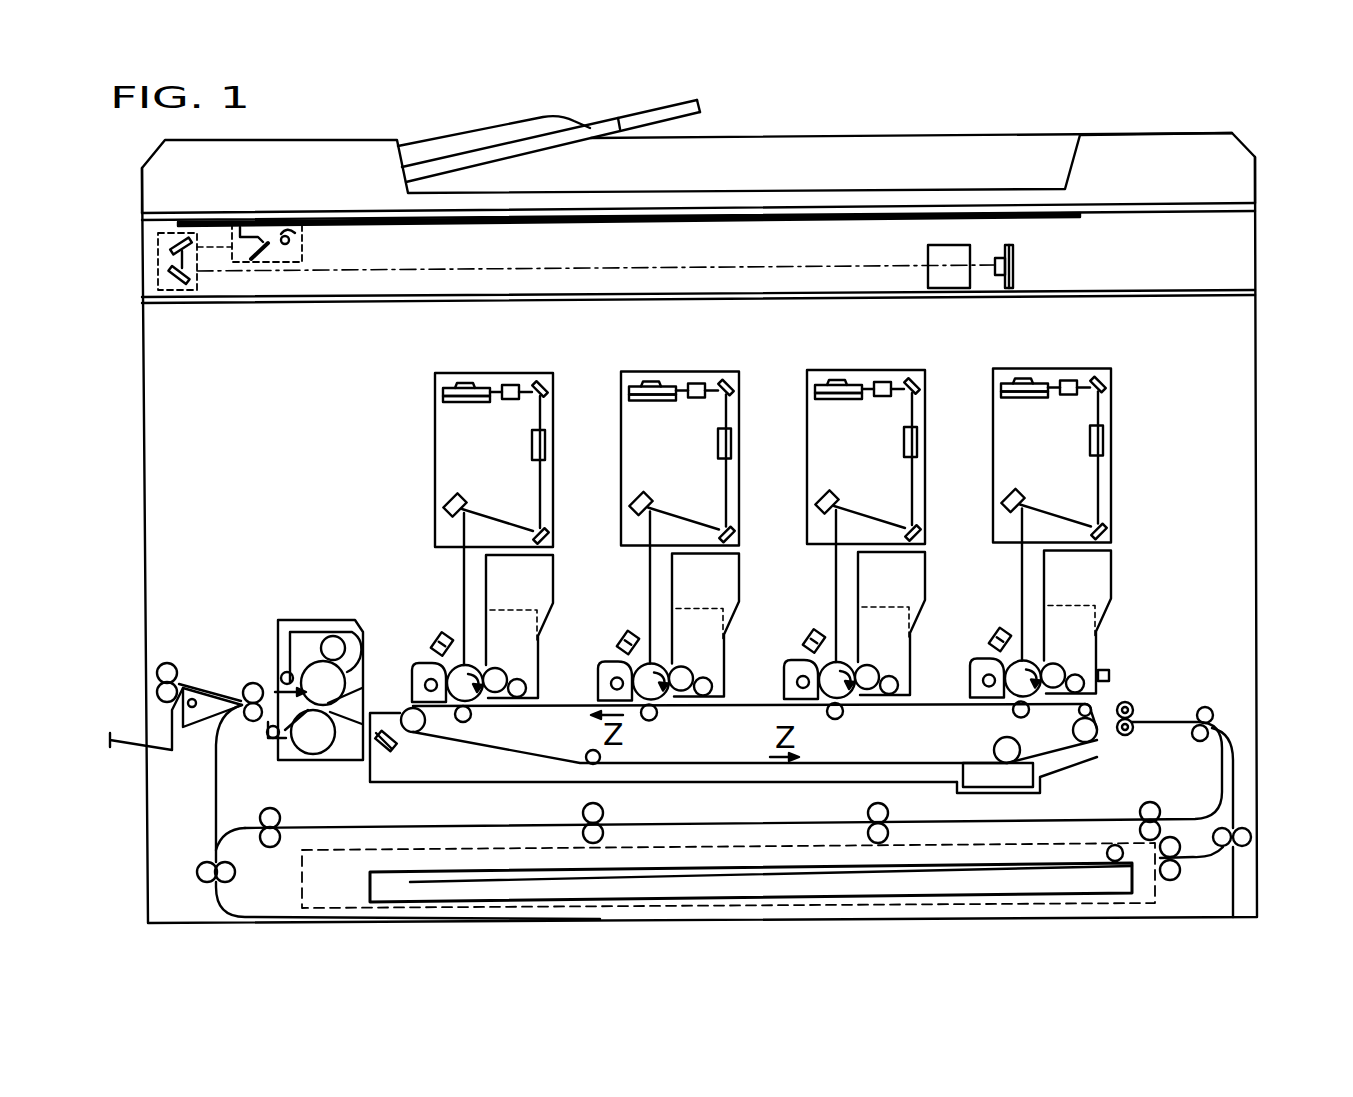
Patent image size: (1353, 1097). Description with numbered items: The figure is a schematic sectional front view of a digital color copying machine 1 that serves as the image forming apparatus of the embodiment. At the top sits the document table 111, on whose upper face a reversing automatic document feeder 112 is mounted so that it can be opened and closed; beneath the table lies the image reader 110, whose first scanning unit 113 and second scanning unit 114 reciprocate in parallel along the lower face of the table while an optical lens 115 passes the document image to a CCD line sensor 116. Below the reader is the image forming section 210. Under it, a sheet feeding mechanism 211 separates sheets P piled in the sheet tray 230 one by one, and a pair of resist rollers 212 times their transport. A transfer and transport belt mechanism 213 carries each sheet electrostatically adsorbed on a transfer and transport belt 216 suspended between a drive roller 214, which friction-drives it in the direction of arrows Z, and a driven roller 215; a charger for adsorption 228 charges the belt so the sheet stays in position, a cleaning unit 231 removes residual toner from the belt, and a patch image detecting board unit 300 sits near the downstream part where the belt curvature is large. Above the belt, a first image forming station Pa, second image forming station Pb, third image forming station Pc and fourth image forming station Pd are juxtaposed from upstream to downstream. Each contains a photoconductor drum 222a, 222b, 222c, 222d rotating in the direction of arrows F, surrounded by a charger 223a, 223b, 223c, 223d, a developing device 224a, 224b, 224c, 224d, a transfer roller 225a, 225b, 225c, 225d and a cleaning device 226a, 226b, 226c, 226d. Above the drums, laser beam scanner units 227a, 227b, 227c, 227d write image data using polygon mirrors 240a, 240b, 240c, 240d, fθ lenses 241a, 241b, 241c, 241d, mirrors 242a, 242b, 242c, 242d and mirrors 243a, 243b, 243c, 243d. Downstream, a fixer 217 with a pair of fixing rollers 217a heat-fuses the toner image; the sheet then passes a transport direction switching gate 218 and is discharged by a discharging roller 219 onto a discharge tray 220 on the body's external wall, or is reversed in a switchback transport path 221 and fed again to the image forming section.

The digital color copying machine 1 is at (1268, 138).
The image reader 110 is at (1216, 259).
The document table 111 is at (967, 213).
The reversing automatic document feeder 112 is at (1215, 188).
The first scanning unit 113 is at (302, 241).
The second scanning unit 114 is at (172, 291).
The optical lens 115 is at (928, 254).
The CCD line sensor 116 is at (1013, 258).
The image forming section 210 is at (1217, 613).
The sheet feeding mechanism 211 is at (1210, 867).
The resist rollers 212 is at (1137, 704).
The transfer and transport belt mechanism 213 is at (857, 755).
The drive roller 214 is at (440, 733).
The driven roller 215 is at (1097, 738).
The transfer and transport belt 216 is at (926, 765).
The fixer 217 is at (330, 624).
The fixing rollers 217a is at (360, 620).
The transport direction switching gate 218 is at (210, 688).
The discharging roller 219 is at (167, 662).
The discharge tray 220 is at (122, 755).
The switchback transport path 221 is at (232, 893).
The photoconductor drum 222a is at (1057, 656).
The photoconductor drum 222b is at (871, 657).
The photoconductor drum 222c is at (685, 659).
The photoconductor drum 222d is at (472, 672).
The charger 223a is at (985, 616).
The charger 223b is at (799, 617).
The charger 223c is at (613, 619).
The charger 223d is at (441, 632).
The developing device 224a is at (1077, 622).
The developing device 224b is at (891, 623).
The developing device 224c is at (705, 625).
The developing device 224d is at (509, 604).
The transfer roller 225a is at (1059, 722).
The transfer roller 225b is at (873, 723).
The transfer roller 225c is at (687, 725).
The transfer roller 225d is at (472, 716).
The cleaning device 226a is at (965, 657).
The cleaning device 226b is at (779, 658).
The cleaning device 226c is at (593, 660).
The cleaning device 226d is at (414, 665).
The laser beam scanner unit 227a is at (1049, 481).
The laser beam scanner unit 227b is at (863, 482).
The laser beam scanner unit 227c is at (677, 484).
The laser beam scanner unit 227d is at (447, 367).
The charger for adsorption 228 is at (1097, 708).
The sheet tray 230 is at (1137, 892).
The cleaning unit 231 is at (1043, 781).
The polygon mirror 240a is at (1027, 411).
The polygon mirror 240b is at (841, 412).
The polygon mirror 240c is at (655, 414).
The polygon mirror 240d is at (457, 404).
The fθ lens 241a is at (1063, 405).
The fθ lens 241b is at (877, 406).
The fθ lens 241c is at (691, 408).
The fθ lens 241d is at (507, 384).
The mirror 242a is at (1084, 435).
The mirror 242b is at (898, 436).
The mirror 242c is at (712, 438).
The mirror 242d is at (540, 381).
The mirror 243a is at (992, 481).
The mirror 243b is at (806, 482).
The mirror 243c is at (620, 484).
The mirror 243d is at (448, 497).
The patch image detecting board unit 300 is at (397, 751).
The sheet P is at (475, 880).
The first image forming station Pa is at (999, 600).
The second image forming station Pb is at (813, 601).
The third image forming station Pc is at (627, 603).
The fourth image forming station Pd is at (433, 575).